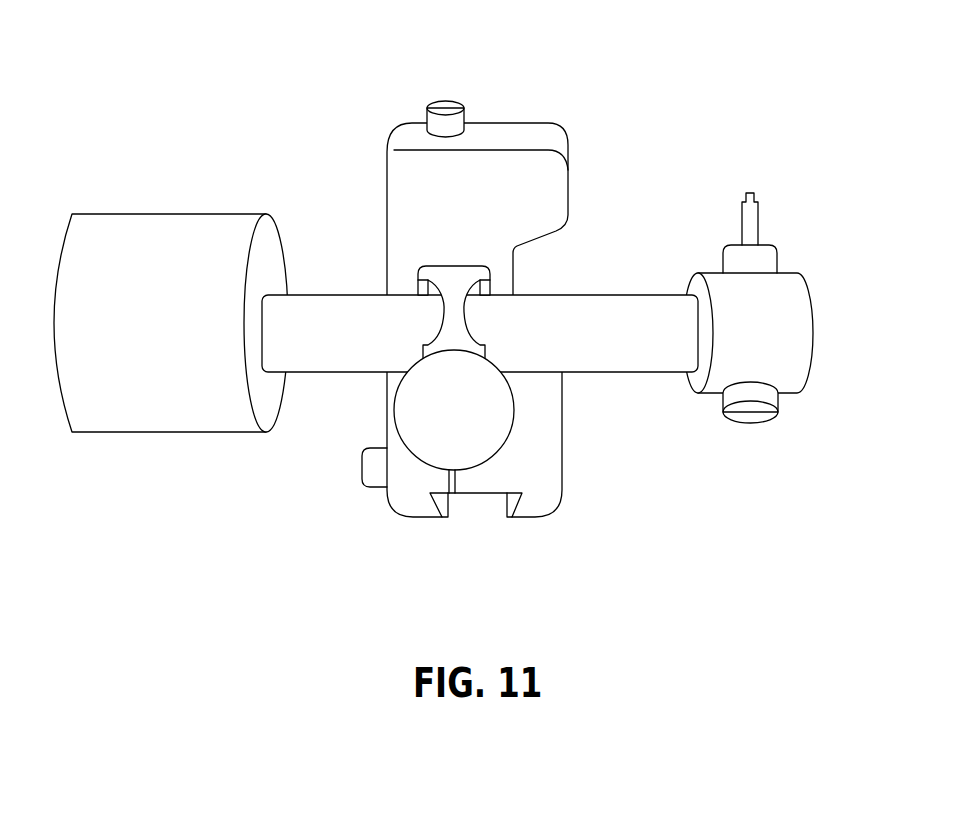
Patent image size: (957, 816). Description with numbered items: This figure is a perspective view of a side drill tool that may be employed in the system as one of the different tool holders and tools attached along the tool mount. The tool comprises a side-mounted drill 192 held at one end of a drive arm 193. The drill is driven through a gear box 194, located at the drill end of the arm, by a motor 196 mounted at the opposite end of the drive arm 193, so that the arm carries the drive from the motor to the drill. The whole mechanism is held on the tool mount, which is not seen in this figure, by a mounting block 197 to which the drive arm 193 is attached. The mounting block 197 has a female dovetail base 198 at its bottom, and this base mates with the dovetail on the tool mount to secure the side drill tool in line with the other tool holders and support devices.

The side-mounted drill 192 is at (760, 220).
The drive arm 193 is at (620, 375).
The gear box 194 is at (810, 378).
The motor 196 is at (162, 432).
The mounting block 197 is at (518, 135).
The female dovetail base 198 is at (510, 502).